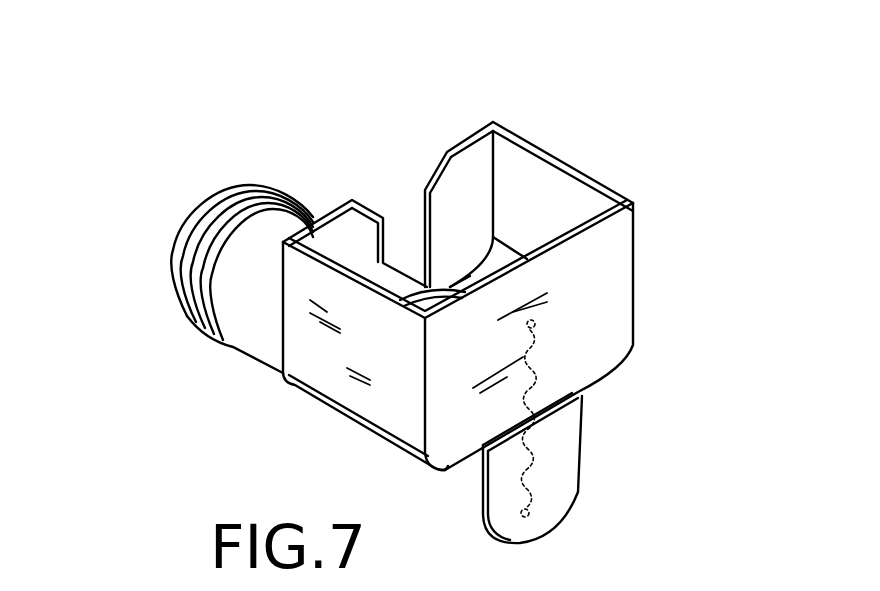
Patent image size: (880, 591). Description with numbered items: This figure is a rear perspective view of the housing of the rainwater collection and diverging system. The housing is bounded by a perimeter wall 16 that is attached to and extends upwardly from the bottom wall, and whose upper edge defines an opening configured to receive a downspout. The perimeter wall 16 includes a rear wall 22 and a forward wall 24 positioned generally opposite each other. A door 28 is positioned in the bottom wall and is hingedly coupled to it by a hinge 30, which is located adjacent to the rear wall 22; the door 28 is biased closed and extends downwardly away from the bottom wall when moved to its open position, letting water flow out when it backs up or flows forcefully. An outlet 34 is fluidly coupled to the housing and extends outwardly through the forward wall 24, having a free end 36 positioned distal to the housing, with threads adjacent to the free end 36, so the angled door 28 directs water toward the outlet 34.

The perimeter wall 16 is at (636, 226).
The rear wall 22 is at (605, 297).
The forward wall 24 is at (460, 179).
The door 28 is at (560, 482).
The hinge 30 is at (560, 408).
The outlet 34 is at (262, 358).
The free end 36 is at (180, 253).